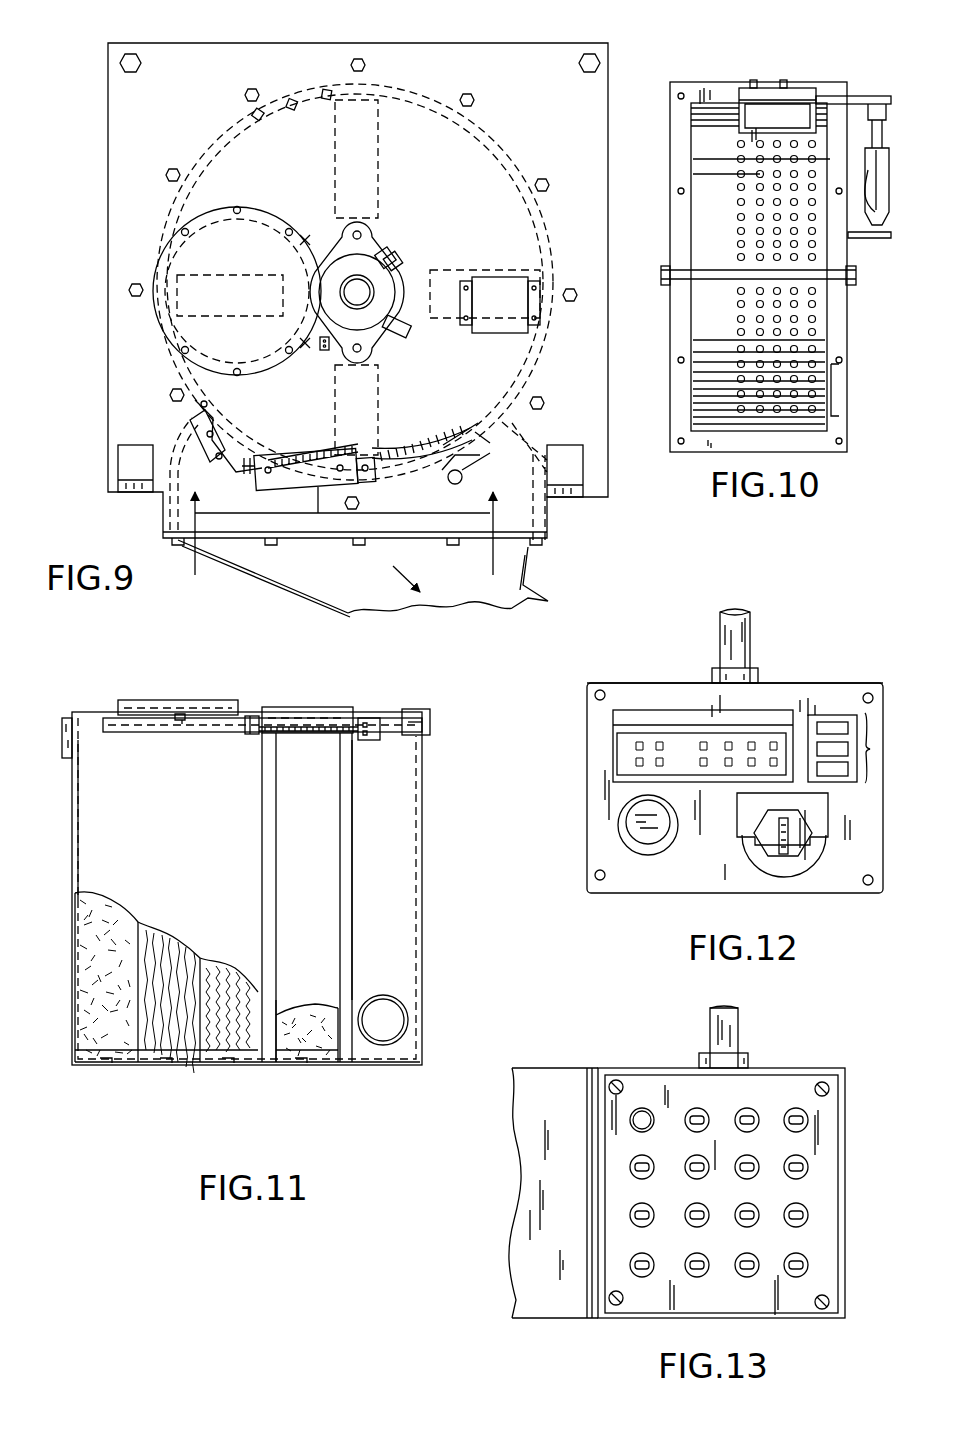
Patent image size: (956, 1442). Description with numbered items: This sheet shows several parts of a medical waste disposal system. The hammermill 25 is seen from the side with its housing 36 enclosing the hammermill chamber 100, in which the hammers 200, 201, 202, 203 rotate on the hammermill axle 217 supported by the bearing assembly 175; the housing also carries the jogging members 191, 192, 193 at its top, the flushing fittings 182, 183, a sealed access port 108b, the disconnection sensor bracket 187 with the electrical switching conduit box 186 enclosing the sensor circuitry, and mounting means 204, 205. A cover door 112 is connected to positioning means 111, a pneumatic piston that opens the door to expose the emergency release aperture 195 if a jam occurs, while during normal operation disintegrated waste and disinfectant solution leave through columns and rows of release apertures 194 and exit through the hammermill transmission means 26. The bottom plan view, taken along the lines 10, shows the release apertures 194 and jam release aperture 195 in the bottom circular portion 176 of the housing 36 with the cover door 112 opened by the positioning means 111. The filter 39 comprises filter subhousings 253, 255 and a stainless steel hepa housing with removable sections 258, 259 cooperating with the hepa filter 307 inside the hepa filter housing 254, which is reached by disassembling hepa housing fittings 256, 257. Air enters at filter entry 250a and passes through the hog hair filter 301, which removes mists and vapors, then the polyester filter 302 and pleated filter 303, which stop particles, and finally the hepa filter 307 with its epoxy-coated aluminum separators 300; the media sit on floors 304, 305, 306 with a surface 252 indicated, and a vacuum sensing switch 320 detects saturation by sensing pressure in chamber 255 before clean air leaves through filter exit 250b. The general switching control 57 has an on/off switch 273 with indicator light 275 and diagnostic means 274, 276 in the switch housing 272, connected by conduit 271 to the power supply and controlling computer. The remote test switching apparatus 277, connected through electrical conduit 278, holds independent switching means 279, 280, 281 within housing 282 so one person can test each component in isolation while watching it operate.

In FIG. 9, the hammermill 25 is at (462, 42).
In FIG. 9, the housing 36 is at (552, 72).
In FIG. 9, the hammermill chamber 100 is at (490, 162).
In FIG. 9, the jogging member 191 is at (263, 112).
In FIG. 9, the jogging member 192 is at (293, 102).
In FIG. 9, the jogging member 193 is at (329, 92).
In FIG. 9, the sealed access port 108b is at (220, 217).
In FIG. 9, the hammer 201 is at (187, 290).
In FIG. 9, the hammer 202 is at (360, 153).
In FIG. 9, the hammer 203 is at (360, 418).
In FIG. 9, the hammermill axle 217 is at (358, 290).
In FIG. 9, the bearing assembly 175 is at (333, 226).
In FIG. 9, the flushing fitting 182 is at (387, 256).
In FIG. 9, the disconnection sensor bracket 187 is at (323, 352).
In FIG. 9, the flushing fitting 183 is at (433, 273).
In FIG. 9, the electrical switching conduit box 186 is at (512, 330).
In FIG. 9, the hammer 200 is at (445, 300).
In FIG. 9, the cover door 112 is at (210, 445).
In FIG. 10, the cover door 112 is at (753, 88).
In FIG. 9, the mounting means 205 is at (118, 465).
In FIG. 9, the mounting means 204 is at (575, 478).
In FIG. 9, the release apertures 194 is at (467, 482).
In FIG. 10, the release apertures 194 is at (832, 370).
In FIG. 9, the section lines 10— 10 is at (344, 547).
In FIG. 9, the positioning means 111 is at (320, 462).
In FIG. 10, the positioning means 111 is at (893, 215).
In FIG. 9, the hammermill transmission means 26 is at (386, 598).
In FIG. 10, the bottom circular portion 176 is at (710, 174).
In FIG. 10, the emergency release aperture 195 is at (779, 113).
In FIG. 11, the filter 39 is at (426, 760).
In FIG. 11, the filter entry 250a is at (68, 718).
In FIG. 11, the hepa housing fitting 257 is at (246, 718).
In FIG. 11, the hepa housing fitting 256 is at (376, 722).
In FIG. 11, the vacuum sensing switch 320 is at (430, 722).
In FIG. 11, the removable section 259 is at (342, 822).
In FIG. 11, the removable section 258 is at (276, 948).
In FIG. 11, the filter subhousing 253 is at (190, 860).
In FIG. 11, the filter subhousing 255 is at (400, 882).
In FIG. 11, the filter exit 250b is at (395, 1017).
In FIG. 11, the hog hair filter 301 is at (85, 965).
In FIG. 11, the first bin floor 304 is at (98, 1062).
In FIG. 11, the material surface 252 is at (128, 1062).
In FIG. 11, the polyester filter 302 is at (145, 1062).
In FIG. 11, the second bin floor 305 is at (176, 1062).
In FIG. 11, the pleated filter 303 is at (208, 1062).
In FIG. 11, the third bin floor 306 is at (240, 1062).
In FIG. 11, the aluminum separators 300 is at (332, 1040).
In FIG. 11, the hepa filter 307 is at (296, 1062).
In FIG. 11, the hepa filter housing 254 is at (342, 1060).
In FIG. 12, the general switching control 57 is at (915, 798).
In FIG. 12, the conduit 271 is at (745, 646).
In FIG. 12, the switch housing 272 is at (795, 692).
In FIG. 12, the diagnostic means 274 is at (648, 738).
In FIG. 12, the diagnostic means 276 is at (870, 749).
In FIG. 12, the indicator light 275 is at (645, 850).
In FIG. 12, the general on/off switch 273 is at (783, 858).
In FIG. 13, the remote test switching apparatus 277 is at (808, 1068).
In FIG. 13, the housing 282 is at (566, 1090).
In FIG. 13, the electrical conduit 278 is at (725, 1030).
In FIG. 13, the switching means 279 is at (808, 1123).
In FIG. 13, the switching means 280 is at (755, 1172).
In FIG. 13, the switching means 281 is at (755, 1273).